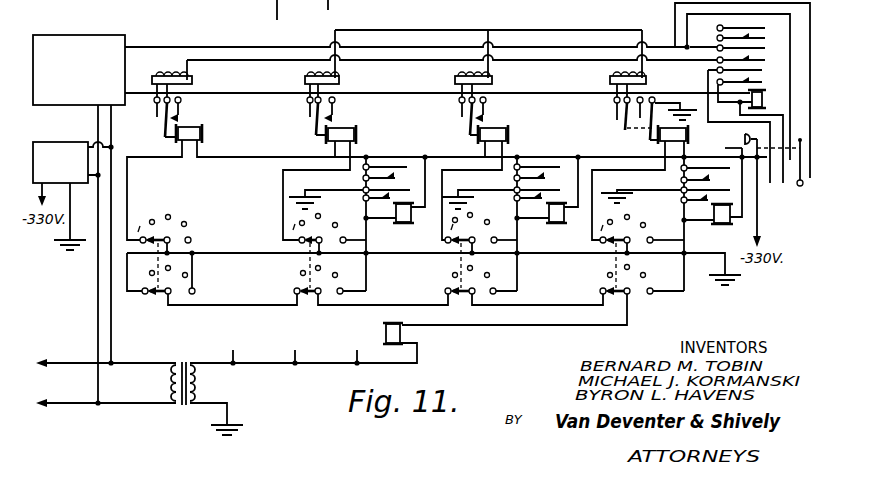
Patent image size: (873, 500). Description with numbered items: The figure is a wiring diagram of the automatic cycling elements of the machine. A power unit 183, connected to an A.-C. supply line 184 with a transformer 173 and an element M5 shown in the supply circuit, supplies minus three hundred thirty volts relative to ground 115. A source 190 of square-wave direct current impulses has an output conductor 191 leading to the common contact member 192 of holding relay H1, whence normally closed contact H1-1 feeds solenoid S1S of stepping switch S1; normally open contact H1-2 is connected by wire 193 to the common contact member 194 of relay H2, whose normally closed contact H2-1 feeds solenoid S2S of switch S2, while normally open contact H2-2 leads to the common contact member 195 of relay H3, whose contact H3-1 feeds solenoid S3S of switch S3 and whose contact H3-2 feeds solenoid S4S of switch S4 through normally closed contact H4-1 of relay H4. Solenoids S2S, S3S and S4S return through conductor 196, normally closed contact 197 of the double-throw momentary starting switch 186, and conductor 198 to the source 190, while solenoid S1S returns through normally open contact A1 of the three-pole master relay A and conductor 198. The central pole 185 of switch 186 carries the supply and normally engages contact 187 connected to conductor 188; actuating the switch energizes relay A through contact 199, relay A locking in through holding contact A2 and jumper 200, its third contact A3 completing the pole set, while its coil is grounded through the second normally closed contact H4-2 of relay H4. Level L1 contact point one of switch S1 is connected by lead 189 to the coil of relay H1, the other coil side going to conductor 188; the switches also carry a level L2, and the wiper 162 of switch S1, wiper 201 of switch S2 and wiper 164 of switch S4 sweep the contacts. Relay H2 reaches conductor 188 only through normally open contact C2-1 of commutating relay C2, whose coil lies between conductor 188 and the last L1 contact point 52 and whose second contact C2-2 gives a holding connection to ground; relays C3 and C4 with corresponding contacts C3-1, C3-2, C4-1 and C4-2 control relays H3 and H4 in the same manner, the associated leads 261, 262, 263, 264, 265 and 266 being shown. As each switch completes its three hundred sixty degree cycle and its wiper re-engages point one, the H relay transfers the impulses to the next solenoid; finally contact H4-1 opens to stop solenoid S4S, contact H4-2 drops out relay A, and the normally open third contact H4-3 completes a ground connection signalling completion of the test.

The ground 115 is at (66, 258).
The source of square wave direct current impulses 190 is at (106, 42).
The power unit 183 is at (67, 128).
The conductor 198 is at (192, 33).
The conductor 196 is at (518, 32).
The wire 193 is at (246, 94).
The output conductor 191 is at (137, 90).
The switch solenoid S1S is at (183, 72).
The switch solenoid S2S is at (300, 78).
The switch solenoid S3S is at (450, 78).
The switch solenoid S4S is at (610, 78).
The normally closed contact H1-1 is at (162, 118).
The normally open contact H1-2 is at (181, 118).
The normally closed contact H2-1 is at (313, 120).
The normally open contact H2-2 is at (335, 120).
The normally closed contact H3-1 is at (467, 120).
The normally open contact H3-2 is at (486, 120).
The normally closed contact H4-1 is at (621, 119).
The second normally closed contact H4-2 is at (645, 121).
The normally open third contact H4-3 is at (661, 98).
The single-pole double-throw relay H1 is at (204, 134).
The single-pole double-throw relay H2 is at (358, 136).
The relay H3 is at (510, 136).
The relay H4 is at (657, 143).
The common contact member 192 is at (162, 135).
The common contact member 194 is at (313, 133).
The common contact member 195 is at (467, 132).
The conductor 188 is at (540, 152).
The lead 189 is at (130, 193).
The conductor 261 is at (278, 197).
The conductor 262 is at (368, 233).
The conductor 263 is at (460, 174).
The conductor 264 is at (518, 233).
The conductor 265 is at (599, 187).
The conductor 266 is at (685, 233).
The normally open contact C2-1 is at (396, 178).
The second normally open contact C2-2 is at (364, 201).
The relay contact C3-1 is at (553, 166).
The relay contact C3-2 is at (516, 205).
The relay contact C4-1 is at (684, 178).
The relay contact C4-2 is at (682, 203).
The relay C2 is at (412, 214).
The commutating relay C3 is at (566, 225).
The commutating relay C4 is at (731, 226).
The last L1 contact point 52 is at (434, 235).
The level 1 L1 is at (232, 245).
The switch level L2 is at (426, 277).
The stepping switch S1 is at (212, 269).
The stepping switch S2 is at (370, 268).
The stepping switch S3 is at (524, 267).
The stepping switch S4 is at (544, 270).
The conductor 162 is at (146, 268).
The L1 wiper 201 is at (297, 250).
The L1 wiper 164 is at (612, 249).
The magnet M5 is at (404, 336).
The transformer 173 is at (200, 398).
The A.-C. supply line 184 is at (37, 363).
The three-pole relay A is at (763, 100).
The normally open contact A1 is at (764, 51).
The second normally open contact A2 is at (764, 72).
The relay contact A3 is at (764, 29).
The jumper 200 is at (741, 102).
The double-throw momentary contact starting switch 186 is at (745, 137).
The contact 187 is at (752, 162).
The normally open contact 199 is at (772, 179).
The central pole 185 is at (769, 184).
The normally closed contact 197 is at (800, 186).